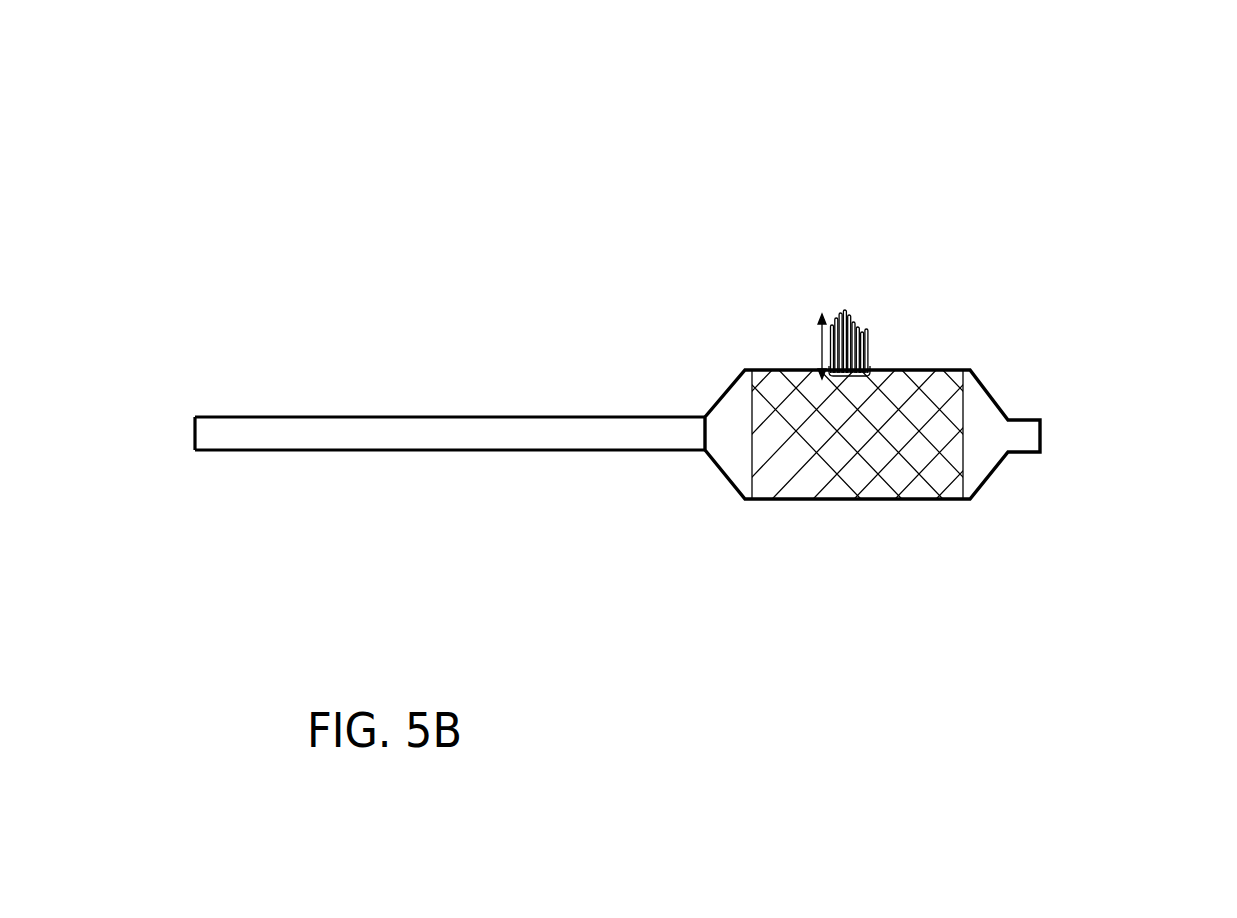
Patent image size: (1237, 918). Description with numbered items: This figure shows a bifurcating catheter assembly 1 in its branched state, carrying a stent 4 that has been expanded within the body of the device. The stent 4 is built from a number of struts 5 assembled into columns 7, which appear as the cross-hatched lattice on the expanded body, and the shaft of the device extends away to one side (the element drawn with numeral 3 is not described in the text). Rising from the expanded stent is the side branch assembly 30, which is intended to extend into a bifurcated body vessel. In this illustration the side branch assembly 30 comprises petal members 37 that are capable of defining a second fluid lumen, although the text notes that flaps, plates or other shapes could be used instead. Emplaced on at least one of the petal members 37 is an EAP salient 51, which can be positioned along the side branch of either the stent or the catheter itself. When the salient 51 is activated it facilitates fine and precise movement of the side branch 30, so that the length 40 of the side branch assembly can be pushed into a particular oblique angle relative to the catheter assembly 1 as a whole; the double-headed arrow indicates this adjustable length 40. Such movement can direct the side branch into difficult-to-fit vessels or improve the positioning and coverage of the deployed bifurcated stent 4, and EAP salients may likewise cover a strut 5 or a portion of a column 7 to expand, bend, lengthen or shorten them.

The catheter assembly 1 is at (948, 512).
The shaft 3 is at (398, 435).
The stent 4 is at (888, 487).
The strut 5 is at (788, 490).
The column 7 is at (817, 487).
The side branch assembly 30 is at (976, 198).
The petal member 37 is at (866, 338).
The length of the side branch assembly 40 is at (817, 340).
The EAP salient 51 is at (872, 363).